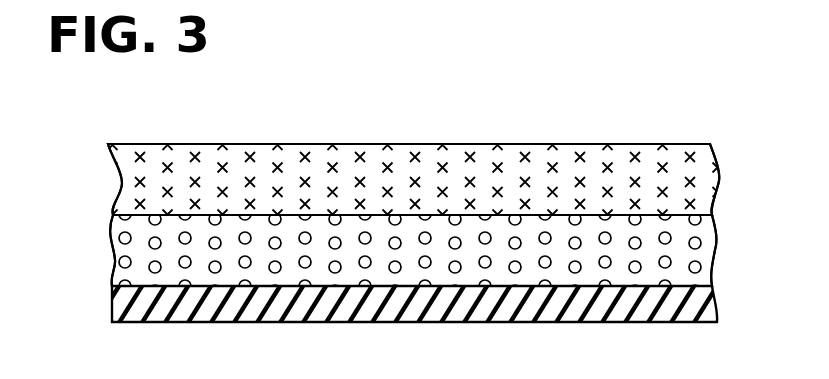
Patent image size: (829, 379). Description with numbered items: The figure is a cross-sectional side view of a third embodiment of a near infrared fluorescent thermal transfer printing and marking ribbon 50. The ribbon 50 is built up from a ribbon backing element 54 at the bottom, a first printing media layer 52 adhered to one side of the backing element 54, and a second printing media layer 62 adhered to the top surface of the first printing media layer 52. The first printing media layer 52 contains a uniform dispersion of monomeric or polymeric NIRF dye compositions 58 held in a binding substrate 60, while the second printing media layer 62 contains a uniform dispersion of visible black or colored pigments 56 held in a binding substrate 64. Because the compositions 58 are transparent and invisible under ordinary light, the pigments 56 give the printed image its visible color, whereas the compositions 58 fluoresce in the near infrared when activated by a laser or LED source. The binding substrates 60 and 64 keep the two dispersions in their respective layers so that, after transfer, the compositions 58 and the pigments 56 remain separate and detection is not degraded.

The NIRF thermal transfer printing and marking ribbon 50 is at (530, 92).
The first printing media layer 52 is at (732, 216).
The ribbon backing element 54 is at (617, 303).
The visible black or colored pigments 56 is at (265, 143).
The NIRF dye compositions 58 is at (454, 272).
The binding substrate 60 is at (233, 273).
The second printing media layer 62 is at (732, 142).
The binding substrate 64 is at (429, 168).